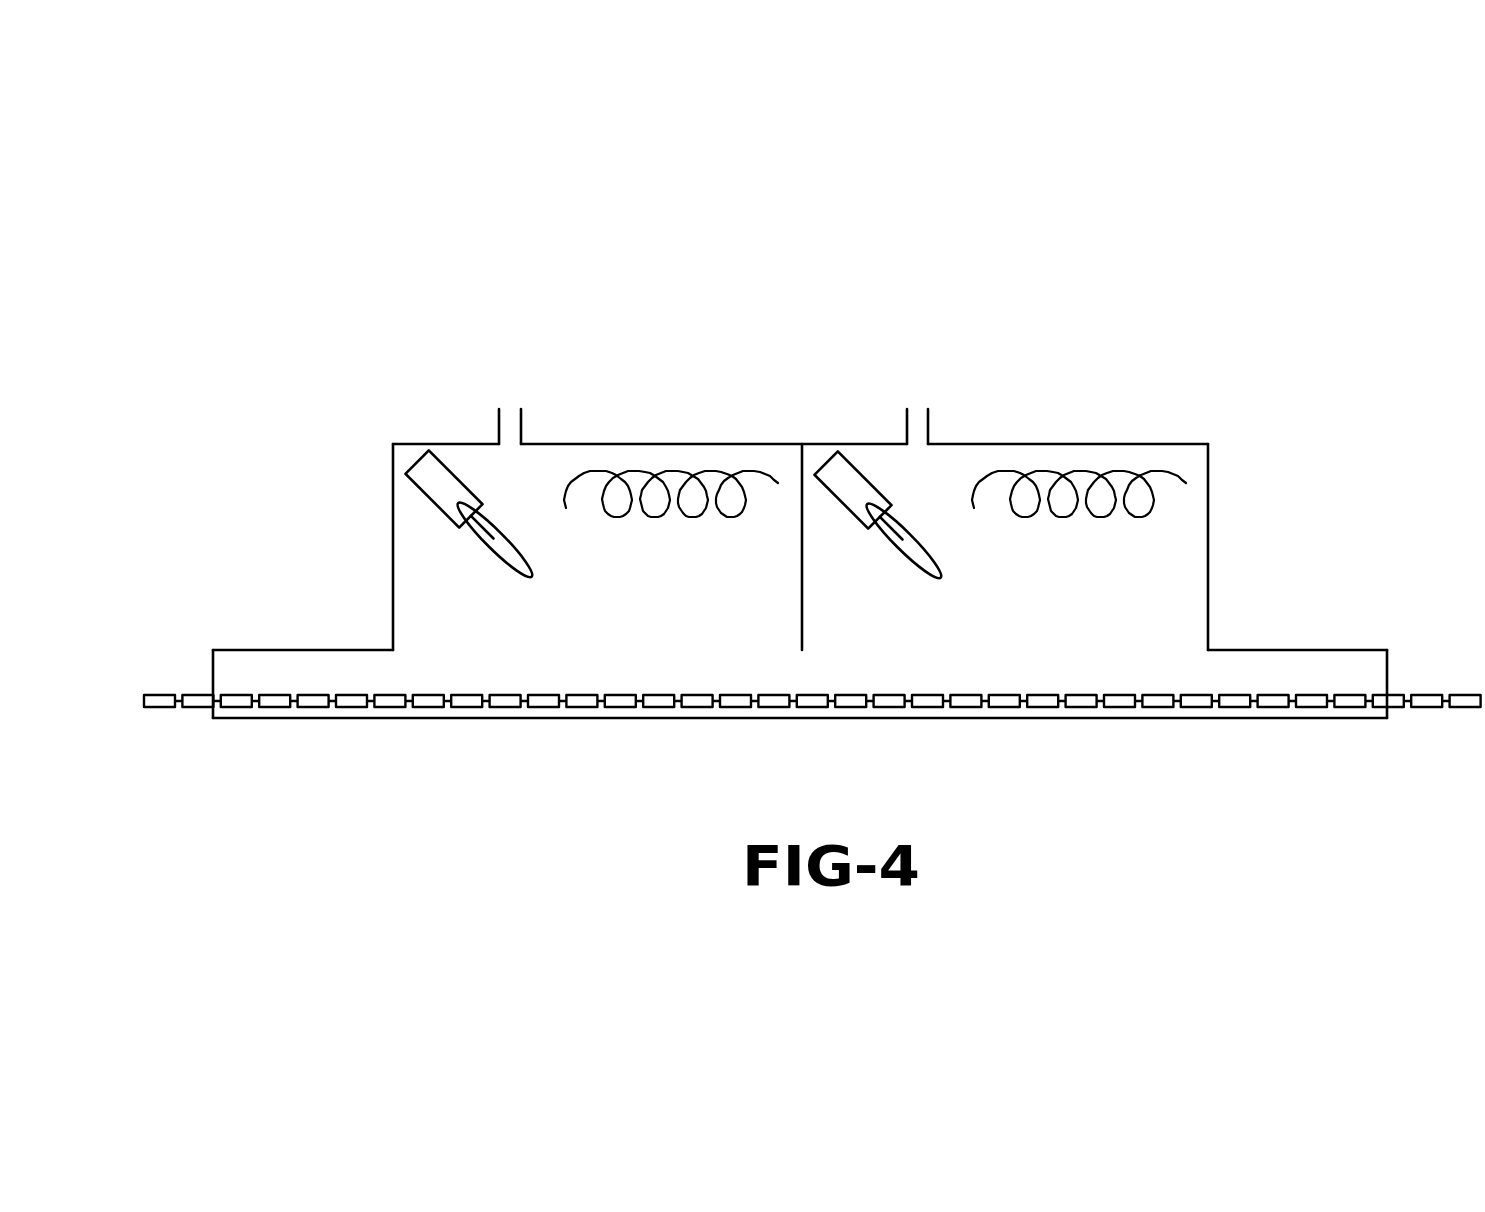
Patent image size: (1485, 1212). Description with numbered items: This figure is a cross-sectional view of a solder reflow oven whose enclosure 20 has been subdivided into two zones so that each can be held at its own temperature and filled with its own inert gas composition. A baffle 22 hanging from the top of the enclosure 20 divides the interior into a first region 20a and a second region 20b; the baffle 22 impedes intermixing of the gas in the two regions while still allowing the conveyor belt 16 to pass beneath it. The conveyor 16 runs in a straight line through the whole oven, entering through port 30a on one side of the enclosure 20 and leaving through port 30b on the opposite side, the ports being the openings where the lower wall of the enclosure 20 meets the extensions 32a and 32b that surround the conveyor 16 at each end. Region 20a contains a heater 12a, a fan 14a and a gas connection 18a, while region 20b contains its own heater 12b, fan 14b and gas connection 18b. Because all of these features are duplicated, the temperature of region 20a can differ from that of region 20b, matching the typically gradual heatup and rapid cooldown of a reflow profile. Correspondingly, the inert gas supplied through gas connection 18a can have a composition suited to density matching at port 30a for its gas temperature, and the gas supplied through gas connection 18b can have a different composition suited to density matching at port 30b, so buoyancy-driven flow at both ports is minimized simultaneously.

The heater 12a is at (653, 470).
The heater 12b is at (1060, 470).
The fan 14a is at (500, 510).
The fan 14b is at (908, 510).
The conveyor belt 16 is at (1430, 707).
The gas connection 18a is at (508, 418).
The gas connection 18b is at (917, 417).
The enclosure 20 is at (1167, 442).
The region 20a is at (427, 588).
The region 20b is at (1177, 588).
The baffle 22 is at (802, 480).
The port 30a is at (387, 648).
The port 30b is at (1212, 648).
The inlet tunnel 32a is at (270, 650).
The outlet tunnel 32b is at (1332, 650).